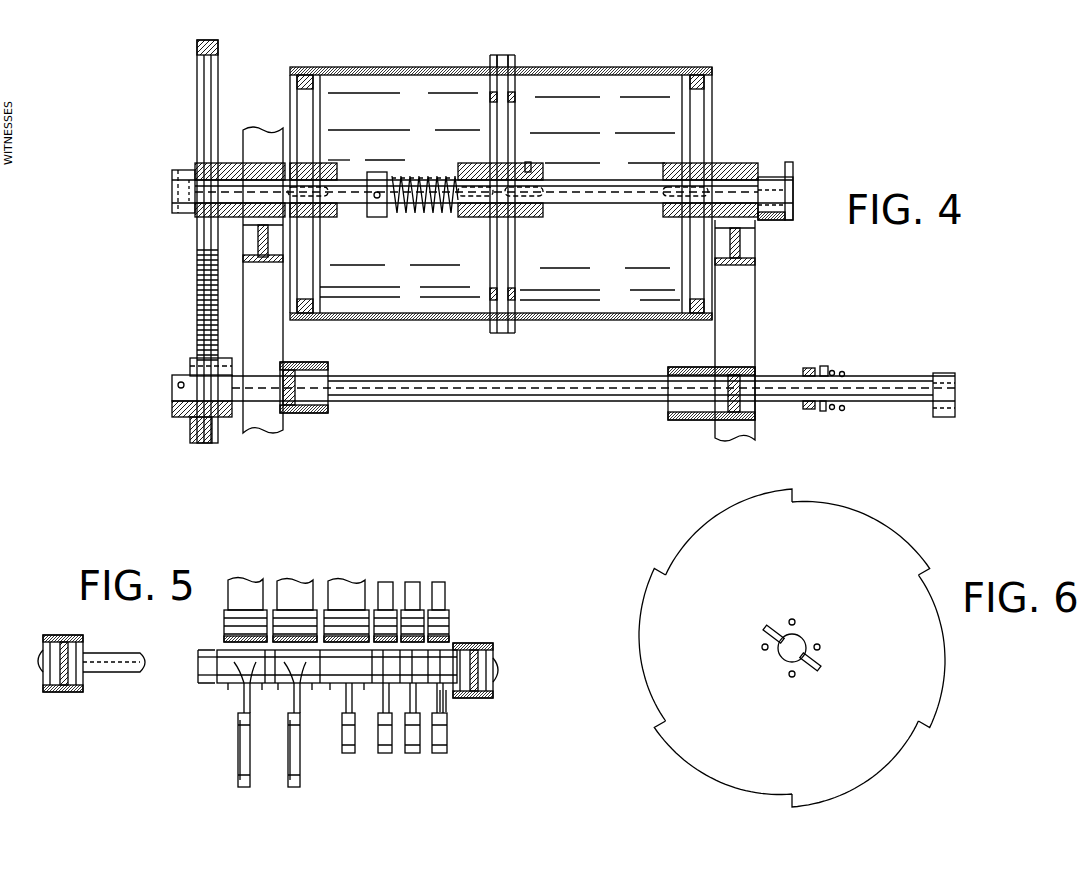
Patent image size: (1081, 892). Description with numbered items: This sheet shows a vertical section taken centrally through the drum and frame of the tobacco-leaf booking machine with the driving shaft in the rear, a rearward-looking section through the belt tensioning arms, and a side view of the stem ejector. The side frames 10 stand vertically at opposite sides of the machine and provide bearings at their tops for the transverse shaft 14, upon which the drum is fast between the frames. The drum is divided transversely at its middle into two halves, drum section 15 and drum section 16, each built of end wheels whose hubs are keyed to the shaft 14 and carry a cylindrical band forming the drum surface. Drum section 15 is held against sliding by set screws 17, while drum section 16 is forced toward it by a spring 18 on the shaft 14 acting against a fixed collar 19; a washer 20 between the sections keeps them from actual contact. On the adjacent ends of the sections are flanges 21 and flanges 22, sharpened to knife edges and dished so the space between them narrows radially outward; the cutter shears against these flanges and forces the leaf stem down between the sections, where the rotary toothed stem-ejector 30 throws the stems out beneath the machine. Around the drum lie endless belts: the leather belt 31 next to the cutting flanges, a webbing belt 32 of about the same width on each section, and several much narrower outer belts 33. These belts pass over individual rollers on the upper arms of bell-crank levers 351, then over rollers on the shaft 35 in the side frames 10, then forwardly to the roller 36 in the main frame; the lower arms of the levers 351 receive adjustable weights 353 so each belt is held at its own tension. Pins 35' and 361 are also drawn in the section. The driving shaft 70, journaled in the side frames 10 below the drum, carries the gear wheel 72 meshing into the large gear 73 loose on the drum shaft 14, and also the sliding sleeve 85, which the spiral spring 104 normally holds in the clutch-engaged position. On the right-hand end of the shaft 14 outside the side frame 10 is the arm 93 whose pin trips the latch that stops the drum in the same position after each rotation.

In FIG. 4, the side frame 10 is at (515, 287).
In FIG. 5, the side frame 10 is at (269, 668).
In FIG. 4, the transverse shaft 14 is at (620, 194).
In FIG. 4, the drum section 15 is at (616, 193).
In FIG. 4, the drum section 16 is at (501, 193).
In FIG. 4, the set screw 17 is at (532, 172).
In FIG. 4, the spring 18 is at (417, 220).
In FIG. 4, the fixed collar 19 is at (379, 180).
In FIG. 4, the washer 20 is at (490, 230).
In FIG. 4, the flange 21 is at (512, 63).
In FIG. 4, the flange 22 is at (497, 62).
In FIG. 6, the rotary toothed stem-ejector 30 is at (792, 648).
In FIG. 5, the leather belt 31 is at (245, 590).
In FIG. 5, the webbing belt 32 is at (346, 590).
In FIG. 5, the outer belt 33 is at (438, 582).
In FIG. 5, the shaft 35 is at (150, 653).
In FIG. 5, the pin 35' is at (270, 687).
In FIG. 5, the roller 36 is at (252, 787).
In FIG. 4, the driving shaft 70 is at (562, 401).
In FIG. 4, the gear wheel 72 is at (197, 343).
In FIG. 4, the large gear 73 is at (197, 94).
In FIG. 4, the sliding sleeve 85 is at (806, 410).
In FIG. 4, the arm 93 is at (786, 170).
In FIG. 4, the spiral spring 104 is at (843, 411).
In FIG. 5, the bell-crank lever 351 is at (222, 690).
In FIG. 5, the adjustable weight 353 is at (412, 753).
In FIG. 5, the pin 361 is at (445, 706).